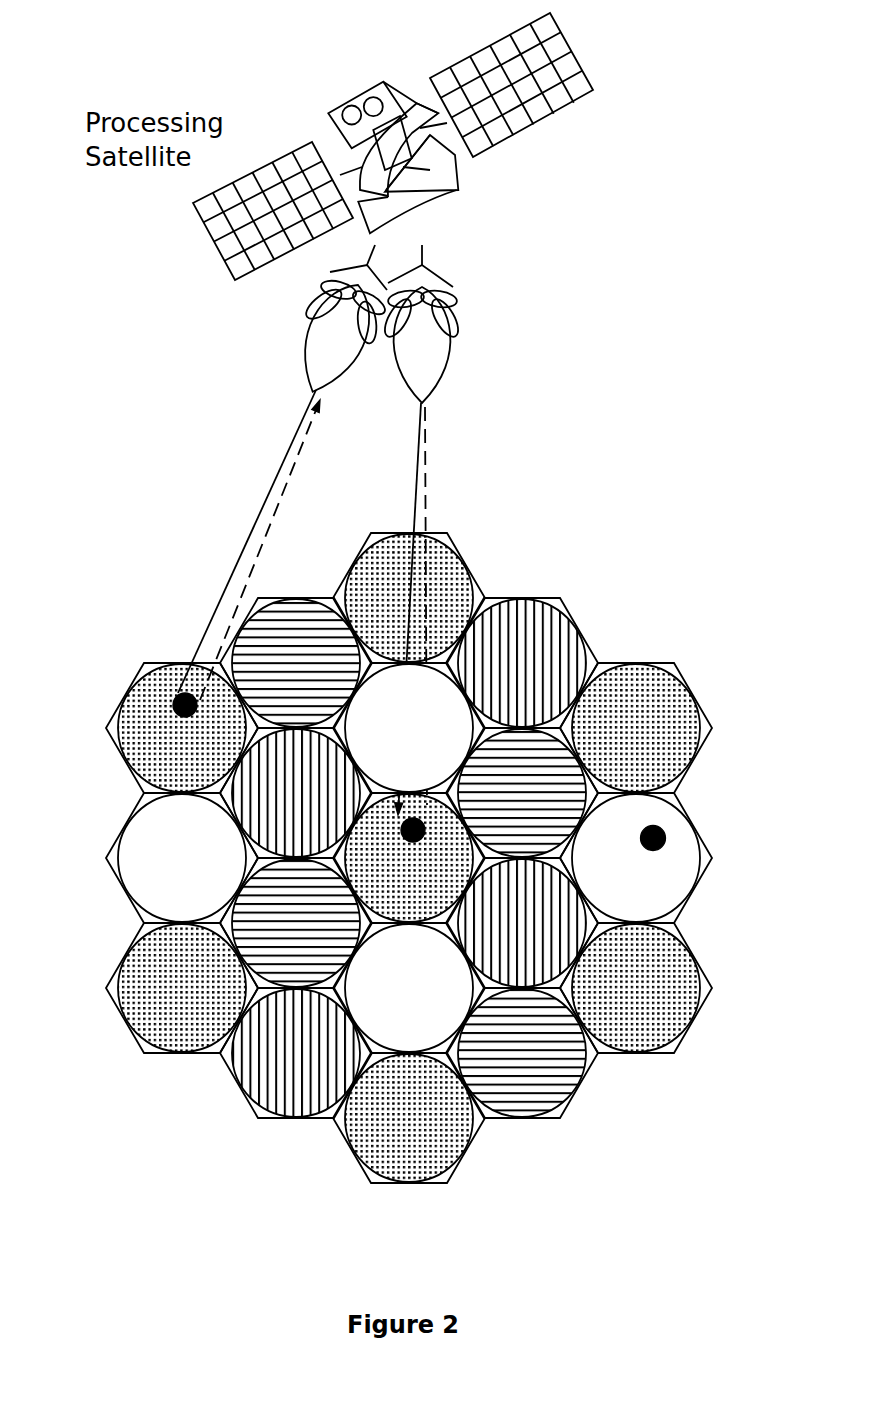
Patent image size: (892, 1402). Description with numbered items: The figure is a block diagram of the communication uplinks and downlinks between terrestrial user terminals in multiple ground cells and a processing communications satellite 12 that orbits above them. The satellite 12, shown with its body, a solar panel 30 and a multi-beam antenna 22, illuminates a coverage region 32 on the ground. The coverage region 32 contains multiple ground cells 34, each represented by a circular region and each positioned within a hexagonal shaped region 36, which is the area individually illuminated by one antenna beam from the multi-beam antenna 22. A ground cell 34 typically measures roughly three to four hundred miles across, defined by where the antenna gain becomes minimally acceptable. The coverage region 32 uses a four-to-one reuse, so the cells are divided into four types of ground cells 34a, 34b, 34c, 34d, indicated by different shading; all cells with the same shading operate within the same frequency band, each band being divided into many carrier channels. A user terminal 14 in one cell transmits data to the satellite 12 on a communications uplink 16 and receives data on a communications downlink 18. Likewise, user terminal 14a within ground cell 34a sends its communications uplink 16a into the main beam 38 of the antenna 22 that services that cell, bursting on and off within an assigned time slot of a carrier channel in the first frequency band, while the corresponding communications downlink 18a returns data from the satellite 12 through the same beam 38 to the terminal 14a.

The processing communications satellite 12 is at (412, 146).
The solar panel 30 is at (578, 90).
The multi-beam antenna 22 is at (452, 190).
The main beam 38 is at (312, 372).
The communications downlink 18a is at (278, 467).
The communications uplink 16a is at (292, 485).
The communications downlink 18 is at (415, 467).
The communications uplink 16 is at (428, 467).
The user terminal 14 is at (667, 833).
The user terminal 14a is at (167, 695).
The coverage region 32 is at (406, 858).
The ground cell 34 is at (673, 875).
The ground cell 34a is at (143, 728).
The ground cell 34b is at (260, 635).
The ground cell 34c is at (557, 620).
The ground cell 34d is at (145, 863).
The hexagonal shaped region 36 is at (707, 860).